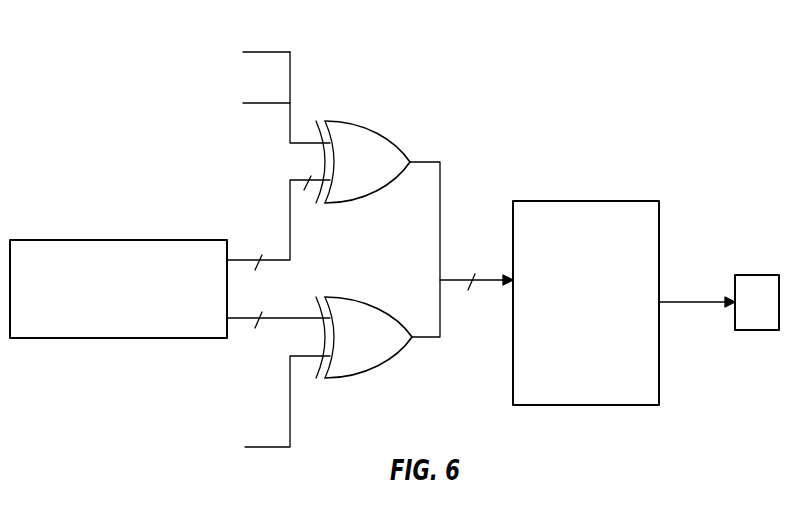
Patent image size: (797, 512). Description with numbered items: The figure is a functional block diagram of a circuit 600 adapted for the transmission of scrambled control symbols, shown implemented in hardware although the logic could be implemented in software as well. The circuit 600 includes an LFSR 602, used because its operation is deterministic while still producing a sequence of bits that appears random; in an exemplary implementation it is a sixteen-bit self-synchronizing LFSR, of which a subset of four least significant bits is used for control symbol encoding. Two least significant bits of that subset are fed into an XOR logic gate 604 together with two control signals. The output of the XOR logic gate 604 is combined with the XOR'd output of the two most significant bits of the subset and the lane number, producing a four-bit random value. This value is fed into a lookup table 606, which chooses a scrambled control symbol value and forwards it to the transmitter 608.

The circuit 600 is at (704, 38).
The LFSR 602 is at (125, 340).
The XOR logic gate 604 is at (389, 135).
The lookup table 606 is at (661, 228).
The transmitter 608 is at (765, 332).